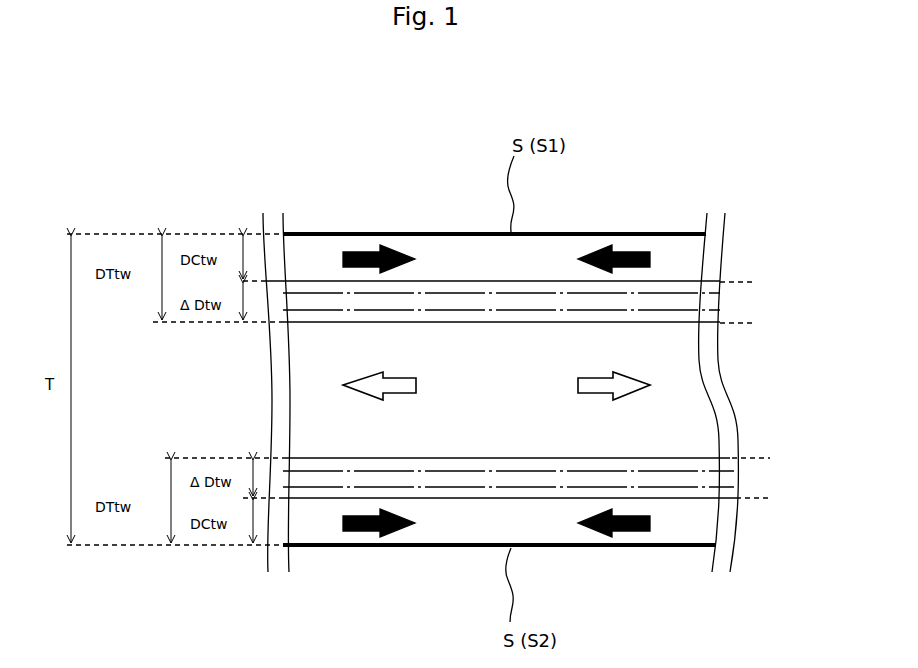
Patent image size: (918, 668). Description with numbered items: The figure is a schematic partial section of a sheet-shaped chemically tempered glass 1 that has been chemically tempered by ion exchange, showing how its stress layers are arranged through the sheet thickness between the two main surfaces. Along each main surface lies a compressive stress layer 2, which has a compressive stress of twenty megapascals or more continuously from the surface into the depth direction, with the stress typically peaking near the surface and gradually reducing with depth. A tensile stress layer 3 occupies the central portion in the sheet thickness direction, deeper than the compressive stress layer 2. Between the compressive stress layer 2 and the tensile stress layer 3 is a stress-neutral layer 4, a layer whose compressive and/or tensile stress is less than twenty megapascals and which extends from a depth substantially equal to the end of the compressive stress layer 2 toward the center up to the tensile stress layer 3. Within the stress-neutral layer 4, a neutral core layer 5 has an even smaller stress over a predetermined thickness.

The chemically tempered glass 1 is at (272, 144).
The compressive stress layer 2 is at (688, 258).
The tensile stress layer 3 is at (688, 392).
The stress-neutral layer 4 is at (752, 282).
The neutral core layer 5 is at (680, 300).